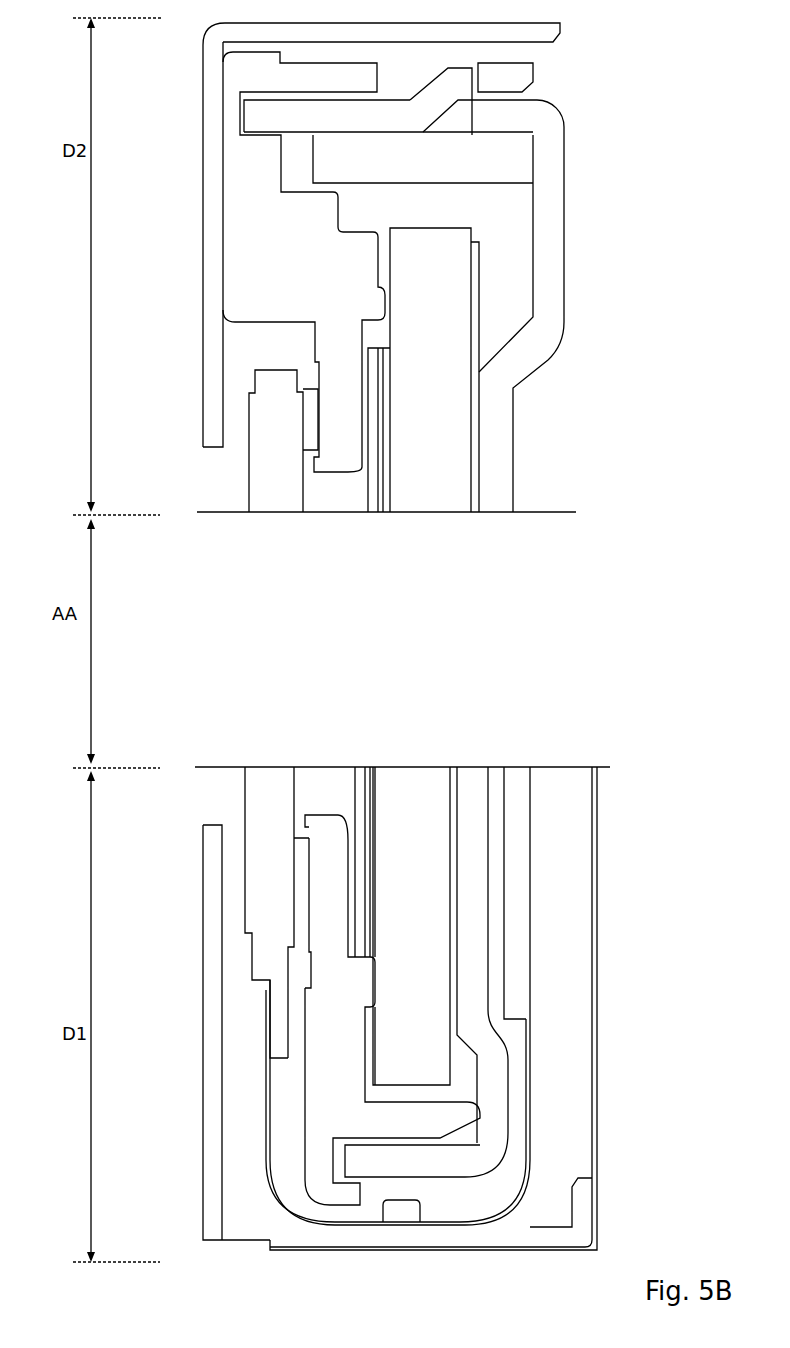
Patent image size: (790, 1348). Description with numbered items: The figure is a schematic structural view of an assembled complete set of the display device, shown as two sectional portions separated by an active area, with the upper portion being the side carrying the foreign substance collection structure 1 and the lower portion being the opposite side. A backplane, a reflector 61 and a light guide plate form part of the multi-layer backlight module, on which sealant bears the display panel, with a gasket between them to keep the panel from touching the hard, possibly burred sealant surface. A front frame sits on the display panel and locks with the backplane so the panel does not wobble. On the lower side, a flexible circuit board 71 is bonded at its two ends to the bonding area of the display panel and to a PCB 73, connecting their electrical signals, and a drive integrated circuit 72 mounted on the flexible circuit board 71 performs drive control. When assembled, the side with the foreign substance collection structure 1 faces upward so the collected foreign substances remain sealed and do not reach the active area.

The foreign substance collection structure 1 is at (507, 143).
The reflector 61 is at (476, 398).
The flexible circuit board 71 is at (265, 1140).
The drive integrated circuit 72 is at (400, 1215).
The PCB 73 is at (513, 945).